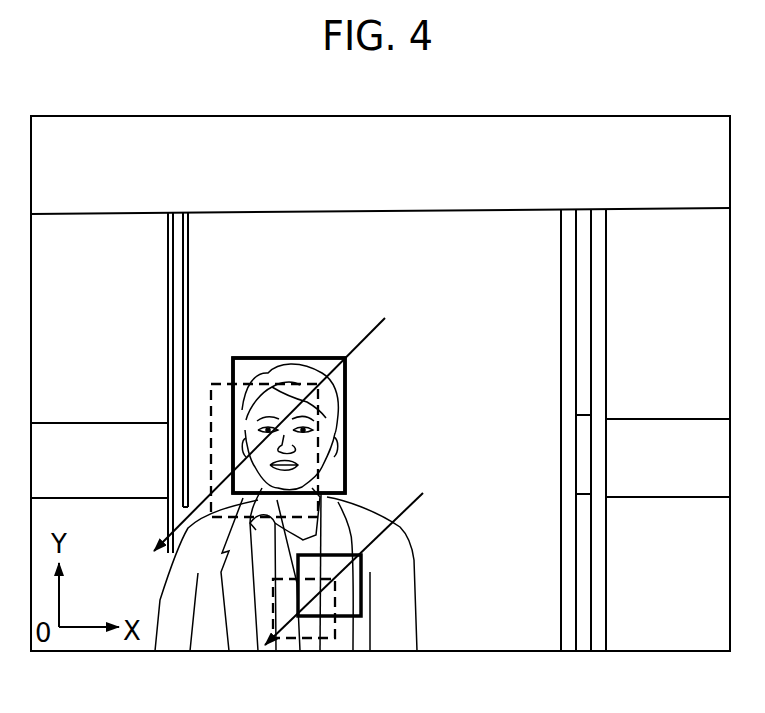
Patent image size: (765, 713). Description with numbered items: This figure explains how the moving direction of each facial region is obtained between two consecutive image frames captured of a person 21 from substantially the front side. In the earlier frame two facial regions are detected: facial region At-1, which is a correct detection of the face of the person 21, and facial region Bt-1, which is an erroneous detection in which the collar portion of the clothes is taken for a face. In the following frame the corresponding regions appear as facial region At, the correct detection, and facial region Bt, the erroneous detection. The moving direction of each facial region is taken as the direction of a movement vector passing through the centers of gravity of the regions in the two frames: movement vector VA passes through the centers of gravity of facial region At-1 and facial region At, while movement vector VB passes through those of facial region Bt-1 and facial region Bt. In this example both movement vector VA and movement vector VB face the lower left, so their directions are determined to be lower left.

The person 21 is at (259, 350).
The facial region At-1 is at (347, 385).
The facial region At is at (320, 452).
The facial region Bt-1 is at (363, 585).
The facial region Bt is at (337, 600).
The movement vector VA is at (288, 424).
The movement vector VB is at (359, 560).